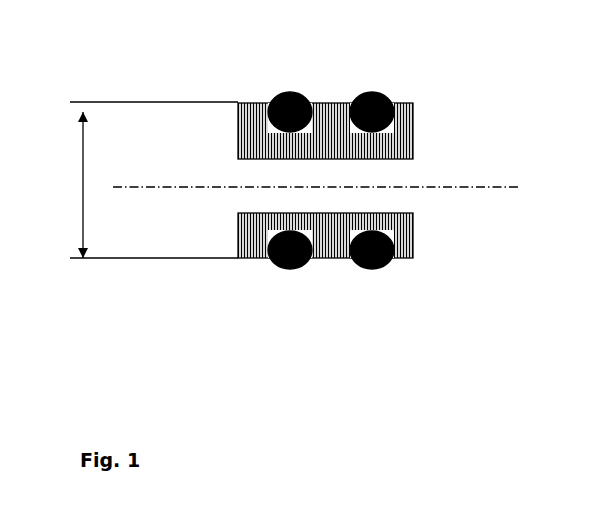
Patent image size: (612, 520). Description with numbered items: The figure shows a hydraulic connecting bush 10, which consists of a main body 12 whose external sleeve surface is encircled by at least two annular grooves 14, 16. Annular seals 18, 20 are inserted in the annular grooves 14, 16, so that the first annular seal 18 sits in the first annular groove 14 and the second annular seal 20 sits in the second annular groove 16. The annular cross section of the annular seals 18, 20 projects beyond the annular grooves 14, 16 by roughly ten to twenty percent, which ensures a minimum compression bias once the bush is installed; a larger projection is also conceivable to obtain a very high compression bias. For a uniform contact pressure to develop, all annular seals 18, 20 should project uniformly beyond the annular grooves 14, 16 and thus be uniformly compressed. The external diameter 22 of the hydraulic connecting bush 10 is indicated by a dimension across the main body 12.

The hydraulic connecting bush 10 is at (315, 186).
The main body 12 is at (238, 222).
The first annular groove 14 is at (277, 133).
The second annular groove 16 is at (388, 133).
The first annular seal 18 is at (300, 95).
The second annular seal 20 is at (380, 93).
The external diameter 22 is at (134, 180).